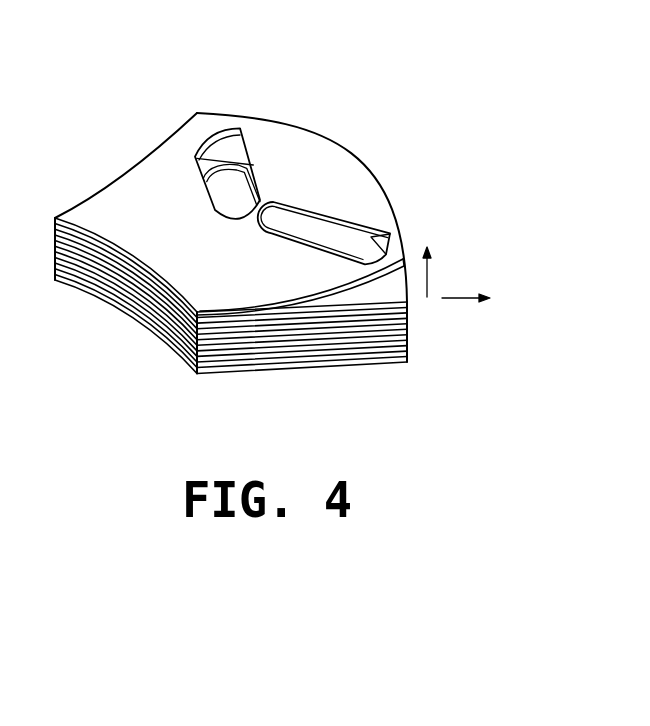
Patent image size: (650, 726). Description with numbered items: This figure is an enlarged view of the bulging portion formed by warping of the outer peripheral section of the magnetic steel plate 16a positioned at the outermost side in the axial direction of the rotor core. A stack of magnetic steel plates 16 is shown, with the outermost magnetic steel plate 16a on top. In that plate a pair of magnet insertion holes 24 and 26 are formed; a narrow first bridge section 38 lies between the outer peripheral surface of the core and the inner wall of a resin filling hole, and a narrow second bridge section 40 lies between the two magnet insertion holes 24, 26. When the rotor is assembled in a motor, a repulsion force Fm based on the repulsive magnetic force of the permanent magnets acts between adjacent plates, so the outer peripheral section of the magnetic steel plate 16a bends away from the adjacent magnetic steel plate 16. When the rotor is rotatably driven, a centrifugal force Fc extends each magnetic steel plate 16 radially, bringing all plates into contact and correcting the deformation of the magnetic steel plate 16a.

The magnetic steel plate 16 is at (408, 303).
The outermost magnetic steel plate 16a is at (360, 168).
The magnet insertion hole 24 is at (222, 187).
The magnet insertion hole 26 is at (291, 238).
The first bridge section 38 is at (228, 127).
The second bridge section 40 is at (262, 200).
The repulsion force Fm is at (428, 273).
The centrifugal force Fc is at (460, 292).